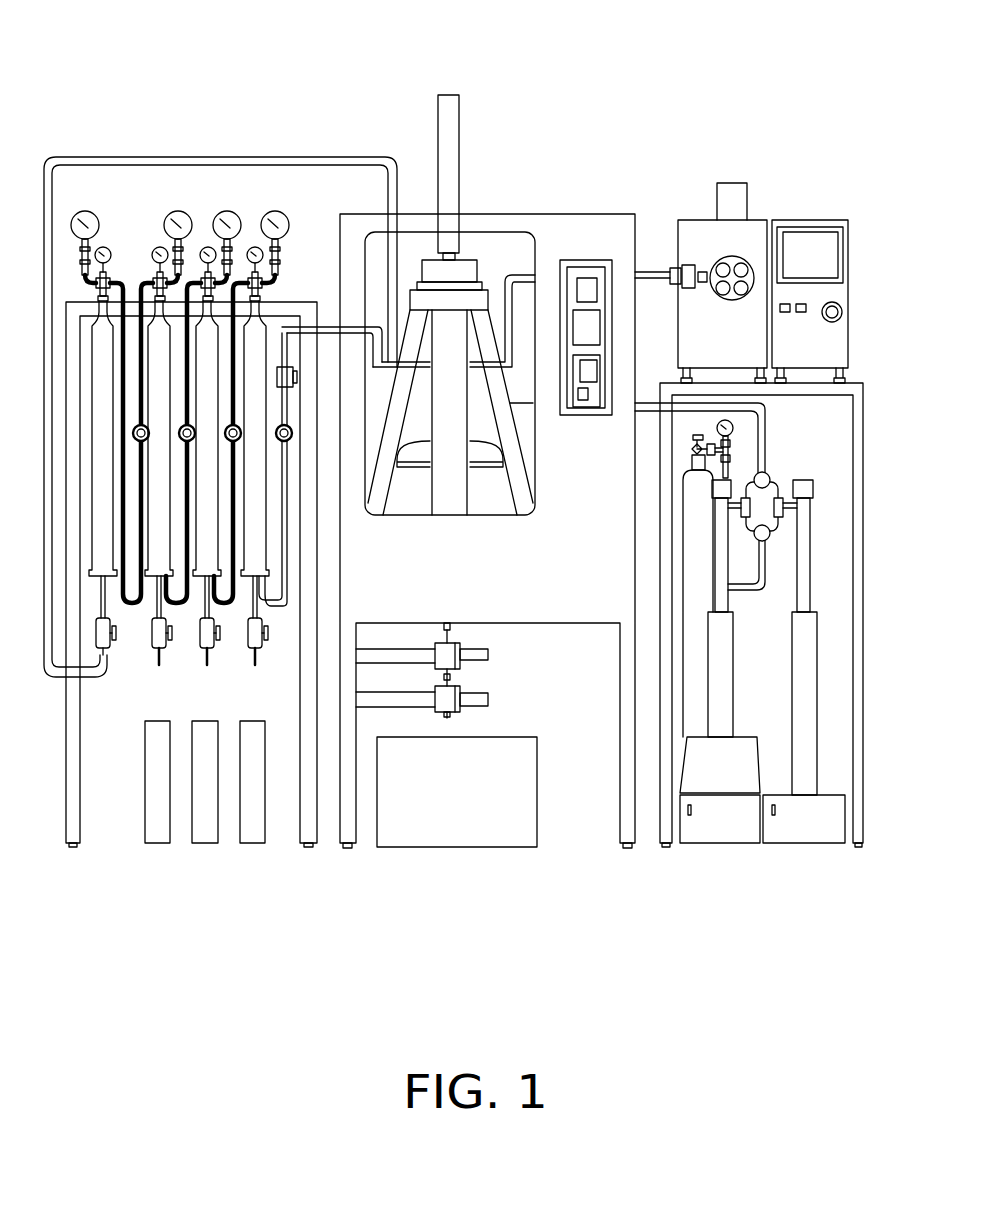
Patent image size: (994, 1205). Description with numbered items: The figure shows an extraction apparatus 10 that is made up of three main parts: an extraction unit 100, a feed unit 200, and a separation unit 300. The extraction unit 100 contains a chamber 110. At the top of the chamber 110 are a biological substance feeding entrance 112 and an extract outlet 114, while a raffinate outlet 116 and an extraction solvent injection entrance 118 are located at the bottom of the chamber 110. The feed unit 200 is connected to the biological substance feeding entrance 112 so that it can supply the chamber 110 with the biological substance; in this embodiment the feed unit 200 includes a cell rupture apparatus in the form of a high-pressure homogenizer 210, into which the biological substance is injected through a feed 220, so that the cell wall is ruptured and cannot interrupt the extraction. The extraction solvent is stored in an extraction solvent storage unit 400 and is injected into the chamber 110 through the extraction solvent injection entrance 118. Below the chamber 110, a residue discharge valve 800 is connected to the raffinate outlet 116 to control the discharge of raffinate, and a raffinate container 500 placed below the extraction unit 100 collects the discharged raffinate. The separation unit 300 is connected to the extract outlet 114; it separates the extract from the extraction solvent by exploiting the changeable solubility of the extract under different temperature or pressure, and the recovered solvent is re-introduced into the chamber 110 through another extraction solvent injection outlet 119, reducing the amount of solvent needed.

The extraction apparatus 10 is at (717, 897).
The extraction unit 100 is at (576, 214).
The chamber 110 is at (452, 338).
The biological substance feeding entrance 112 is at (472, 370).
The extract outlet 114 is at (425, 370).
The raffinate outlet 116 is at (452, 625).
The extraction solvent injection entrance 118 is at (468, 468).
The extraction solvent injection outlet 119 is at (428, 468).
The feed unit 200 is at (763, 218).
The high-pressure homogenizer 210 is at (692, 307).
The feed 220 is at (737, 197).
The separation unit 300 is at (120, 170).
The extraction solvent storage unit 400 is at (700, 560).
The raffinate container 500 is at (465, 822).
The residue discharge valve 800 is at (483, 698).